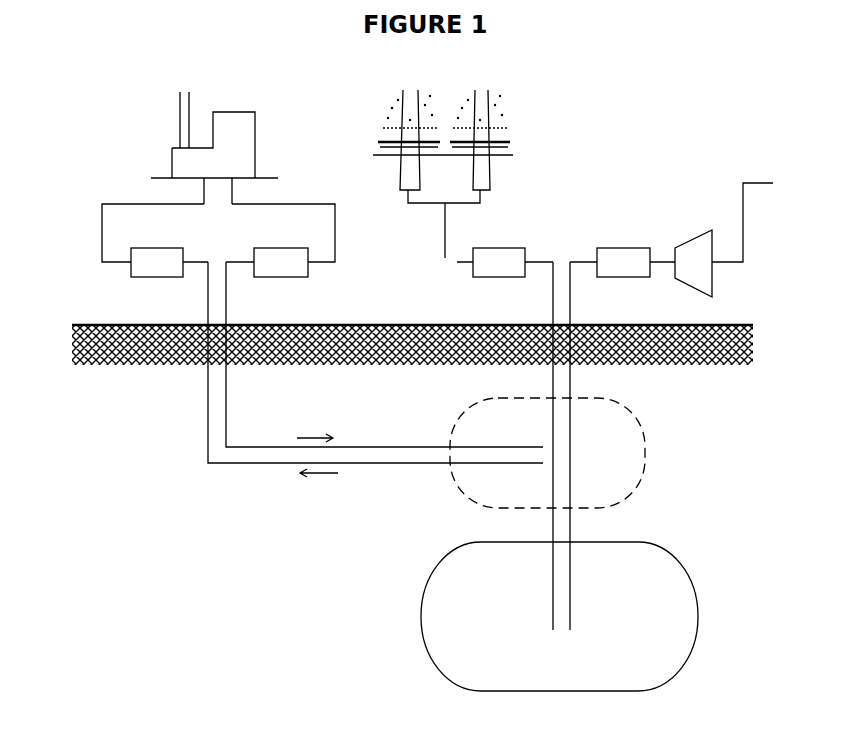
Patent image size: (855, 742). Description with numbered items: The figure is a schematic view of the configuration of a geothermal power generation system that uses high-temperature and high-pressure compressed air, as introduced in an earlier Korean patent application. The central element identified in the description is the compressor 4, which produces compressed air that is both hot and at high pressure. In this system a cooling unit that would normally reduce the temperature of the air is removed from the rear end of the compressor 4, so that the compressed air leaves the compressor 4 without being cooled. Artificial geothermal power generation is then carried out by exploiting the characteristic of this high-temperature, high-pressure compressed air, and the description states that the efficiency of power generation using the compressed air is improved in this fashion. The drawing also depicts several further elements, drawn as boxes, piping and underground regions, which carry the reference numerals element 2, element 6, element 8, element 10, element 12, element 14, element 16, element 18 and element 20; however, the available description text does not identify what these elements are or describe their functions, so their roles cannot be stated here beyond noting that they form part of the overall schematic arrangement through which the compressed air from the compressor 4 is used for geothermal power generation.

The power plant 2 is at (412, 252).
The compressor 4 is at (493, 247).
The well conduits 6 is at (553, 487).
The underground storage reservoir 8 is at (420, 620).
The subterranean formation 10 is at (425, 523).
The pipelines 12 is at (233, 525).
The heat exchanger 14 is at (307, 277).
The heat exchanger 16 is at (122, 273).
The heat exchanger 18 is at (545, 181).
The turbine 20 is at (622, 168).